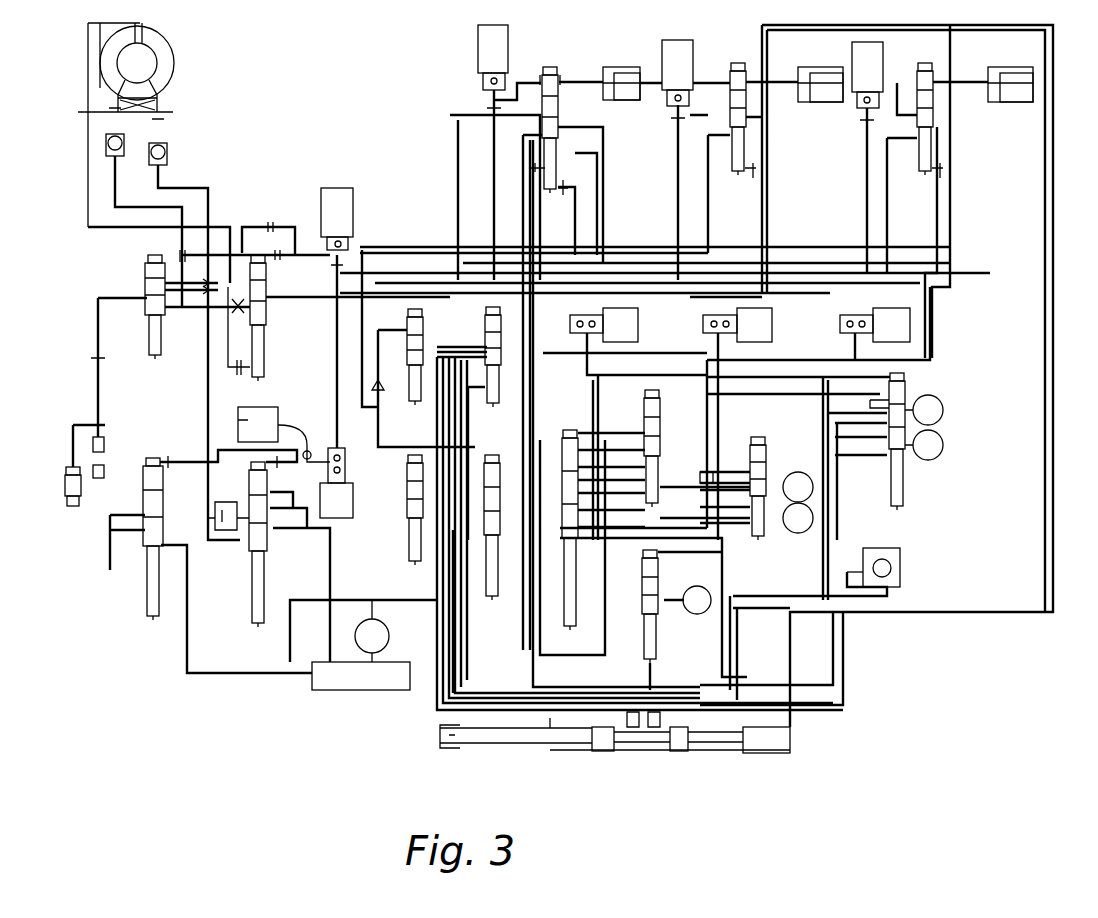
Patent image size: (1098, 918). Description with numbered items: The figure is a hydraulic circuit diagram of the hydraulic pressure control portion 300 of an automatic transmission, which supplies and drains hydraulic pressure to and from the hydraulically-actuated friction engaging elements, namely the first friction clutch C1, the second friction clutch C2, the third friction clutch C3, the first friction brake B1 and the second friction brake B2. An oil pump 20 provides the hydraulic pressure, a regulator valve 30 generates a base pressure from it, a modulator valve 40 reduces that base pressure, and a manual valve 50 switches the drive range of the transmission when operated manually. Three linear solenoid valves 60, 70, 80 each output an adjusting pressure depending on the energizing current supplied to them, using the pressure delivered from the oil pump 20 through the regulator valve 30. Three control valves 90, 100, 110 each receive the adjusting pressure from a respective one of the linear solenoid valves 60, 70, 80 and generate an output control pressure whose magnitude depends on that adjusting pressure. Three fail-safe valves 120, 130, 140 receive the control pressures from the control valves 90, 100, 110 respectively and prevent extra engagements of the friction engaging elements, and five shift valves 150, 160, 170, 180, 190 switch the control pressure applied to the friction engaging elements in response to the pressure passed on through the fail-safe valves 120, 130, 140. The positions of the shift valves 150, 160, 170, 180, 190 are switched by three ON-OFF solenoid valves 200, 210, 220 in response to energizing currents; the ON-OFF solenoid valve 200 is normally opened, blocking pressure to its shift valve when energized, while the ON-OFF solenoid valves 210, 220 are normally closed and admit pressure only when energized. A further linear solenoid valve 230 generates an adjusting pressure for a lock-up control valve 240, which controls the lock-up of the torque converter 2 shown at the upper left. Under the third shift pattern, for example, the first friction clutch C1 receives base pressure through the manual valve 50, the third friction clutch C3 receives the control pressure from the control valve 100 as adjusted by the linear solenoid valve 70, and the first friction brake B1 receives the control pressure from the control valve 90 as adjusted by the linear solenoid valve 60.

The torque converter 2 is at (180, 70).
The oil pump 20 is at (361, 645).
The regulator valve 30 is at (240, 578).
The modulator valve 40 is at (398, 352).
The manual valve 50 is at (797, 733).
The linear solenoid valve 60 is at (478, 45).
The linear solenoid valve 70 is at (665, 53).
The linear solenoid valve 80 is at (850, 50).
The control valve 90 is at (560, 70).
The control valve 100 is at (737, 180).
The control valve 110 is at (920, 180).
The fail-safe valve 120 is at (486, 603).
The fail-safe valve 130 is at (400, 555).
The fail-safe valve 140 is at (493, 412).
The shift valve 150 is at (577, 634).
The shift valve 160 is at (665, 463).
The shift valve 170 is at (772, 458).
The shift valve 180 is at (662, 618).
The shift valve 190 is at (908, 478).
The ON-OFF solenoid valve 200 is at (638, 330).
The ON-OFF solenoid valve 210 is at (772, 330).
The ON-OFF solenoid valve 220 is at (910, 325).
The linear solenoid valve 230 is at (358, 202).
The lock-up control valve 240 is at (278, 330).
The hydraulic pressure control portion 300 is at (433, 125).
The first friction clutch C1 is at (697, 600).
The second friction clutch C2 is at (798, 487).
The third friction clutch C3 is at (928, 410).
The first friction brake B1 is at (798, 518).
The second friction brake B2 is at (928, 445).